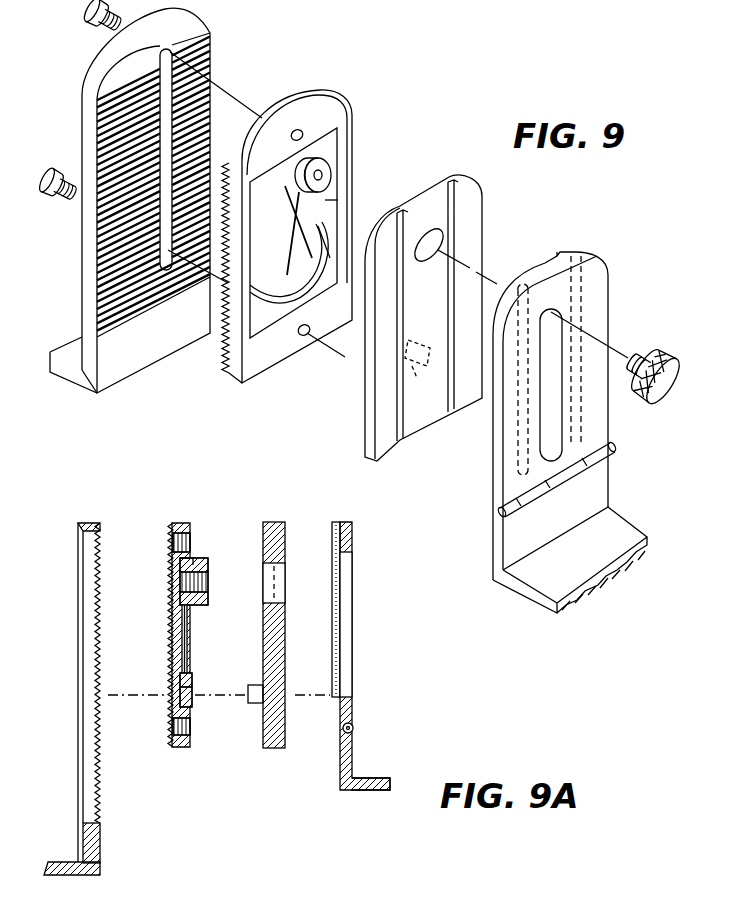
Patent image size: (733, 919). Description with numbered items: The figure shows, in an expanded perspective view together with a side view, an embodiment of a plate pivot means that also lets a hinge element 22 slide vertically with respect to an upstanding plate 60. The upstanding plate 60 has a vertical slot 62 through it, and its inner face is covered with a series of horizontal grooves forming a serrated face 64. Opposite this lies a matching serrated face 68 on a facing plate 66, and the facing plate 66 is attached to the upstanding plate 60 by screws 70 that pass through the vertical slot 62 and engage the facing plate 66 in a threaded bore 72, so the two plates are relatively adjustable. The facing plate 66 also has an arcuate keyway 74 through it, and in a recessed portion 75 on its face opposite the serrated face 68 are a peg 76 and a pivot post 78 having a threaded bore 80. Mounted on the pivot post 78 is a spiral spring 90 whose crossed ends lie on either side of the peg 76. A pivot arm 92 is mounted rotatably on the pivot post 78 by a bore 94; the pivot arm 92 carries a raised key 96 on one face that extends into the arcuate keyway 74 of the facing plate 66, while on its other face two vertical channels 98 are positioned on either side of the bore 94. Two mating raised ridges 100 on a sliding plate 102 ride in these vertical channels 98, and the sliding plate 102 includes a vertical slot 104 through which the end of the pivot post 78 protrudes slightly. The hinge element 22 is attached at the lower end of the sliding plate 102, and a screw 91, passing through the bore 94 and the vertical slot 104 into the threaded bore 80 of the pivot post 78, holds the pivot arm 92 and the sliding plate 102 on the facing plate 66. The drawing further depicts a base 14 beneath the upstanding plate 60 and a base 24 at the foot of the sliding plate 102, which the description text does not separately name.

In FIG. 9, the base plate 14 is at (79, 360).
In FIG. 9A, the base plate 14 is at (62, 862).
In FIG. 9, the hinge element 22 is at (487, 520).
In FIG. 9A, the hinge element 22 is at (360, 734).
In FIG. 9, the bracket base 24 is at (565, 580).
In FIG. 9A, the bracket base 24 is at (378, 779).
In FIG. 9, the upstanding plate 60 is at (172, 214).
In FIG. 9A, the upstanding plate 60 is at (90, 522).
In FIG. 9, the vertical slot 62 is at (166, 52).
In FIG. 9, the serrated face 64 is at (212, 67).
In FIG. 9, the facing plate 66 is at (283, 249).
In FIG. 9A, the facing plate 66 is at (194, 626).
In FIG. 9, the serrated face 68 is at (222, 340).
In FIG. 9, the screws 70 is at (88, 10).
In FIG. 9, the threaded bore 72 is at (298, 129).
In FIG. 9A, the threaded bore 72 is at (192, 542).
In FIG. 9, the arcuate keyway 74 is at (283, 296).
In FIG. 9A, the arcuate keyway 74 is at (172, 700).
In FIG. 9, the recessed portion 75 is at (330, 203).
In FIG. 9A, the recessed portion 75 is at (188, 641).
In FIG. 9, the peg 76 is at (302, 262).
In FIG. 9A, the peg 76 is at (192, 678).
In FIG. 9, the pivot post 78 is at (339, 160).
In FIG. 9A, the pivot post 78 is at (214, 596).
In FIG. 9, the threaded bore 80 is at (322, 176).
In FIG. 9A, the threaded bore 80 is at (209, 580).
In FIG. 9, the spiral spring 90 is at (292, 212).
In FIG. 9A, the spiral spring 90 is at (193, 559).
In FIG. 9, the screw 91 is at (657, 400).
In FIG. 9, the pivot arm 92 is at (431, 313).
In FIG. 9A, the pivot arm 92 is at (278, 618).
In FIG. 9, the bore 94 is at (434, 227).
In FIG. 9A, the bore 94 is at (280, 577).
In FIG. 9, the raised key 96 is at (422, 368).
In FIG. 9A, the raised key 96 is at (255, 704).
In FIG. 9, the vertical channels 98 is at (452, 414).
In FIG. 9, the raised ridges 100 is at (557, 256).
In FIG. 9A, the raised ridges 100 is at (337, 545).
In FIG. 9, the sliding plate 102 is at (567, 405).
In FIG. 9A, the sliding plate 102 is at (355, 638).
In FIG. 9, the vertical slot 104 is at (555, 414).
In FIG. 9A, the vertical slot 104 is at (350, 636).